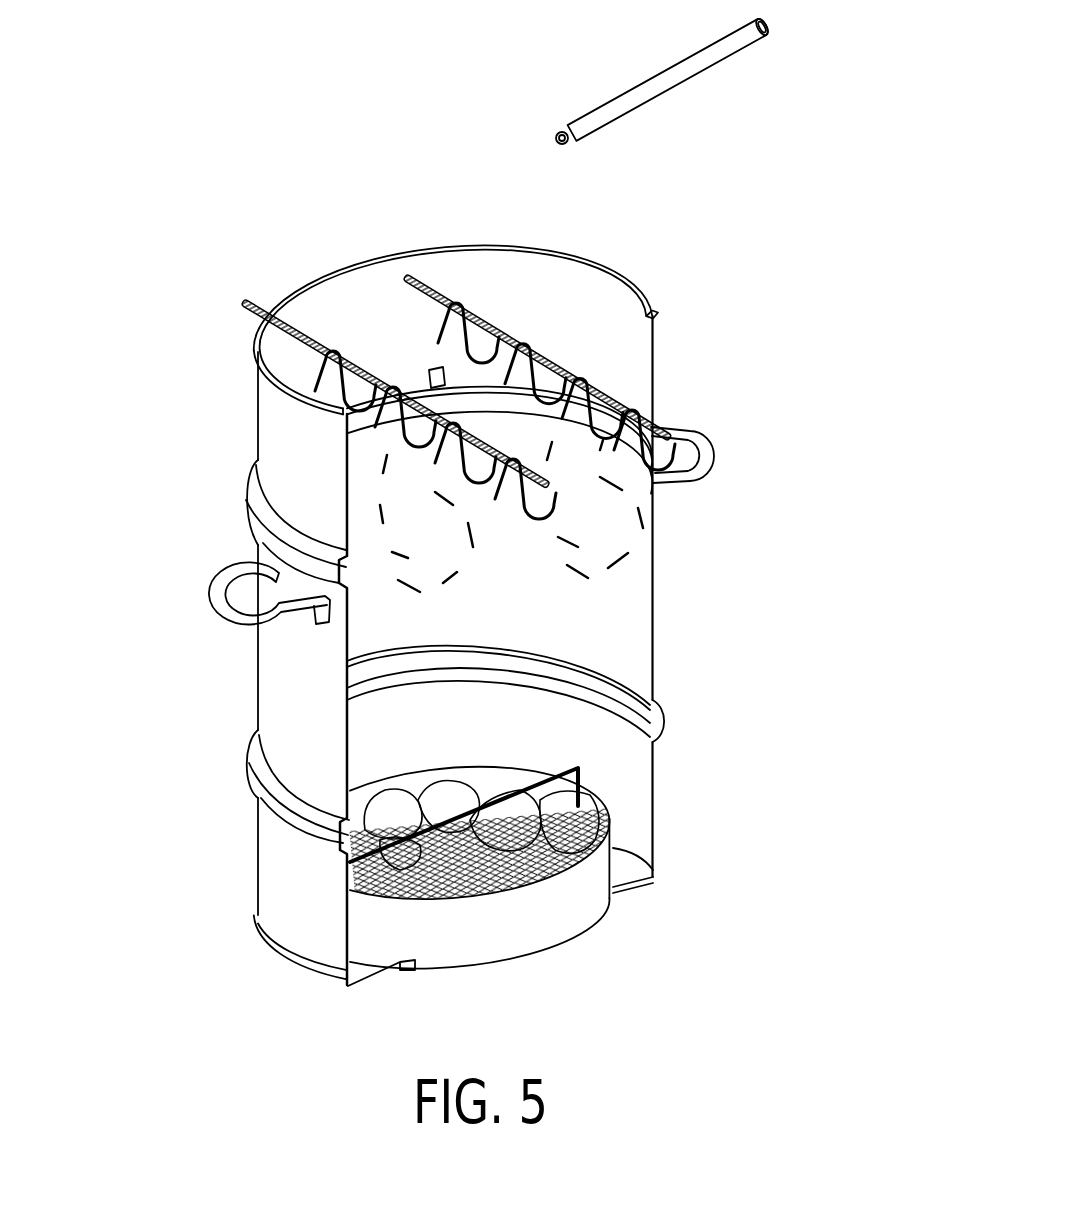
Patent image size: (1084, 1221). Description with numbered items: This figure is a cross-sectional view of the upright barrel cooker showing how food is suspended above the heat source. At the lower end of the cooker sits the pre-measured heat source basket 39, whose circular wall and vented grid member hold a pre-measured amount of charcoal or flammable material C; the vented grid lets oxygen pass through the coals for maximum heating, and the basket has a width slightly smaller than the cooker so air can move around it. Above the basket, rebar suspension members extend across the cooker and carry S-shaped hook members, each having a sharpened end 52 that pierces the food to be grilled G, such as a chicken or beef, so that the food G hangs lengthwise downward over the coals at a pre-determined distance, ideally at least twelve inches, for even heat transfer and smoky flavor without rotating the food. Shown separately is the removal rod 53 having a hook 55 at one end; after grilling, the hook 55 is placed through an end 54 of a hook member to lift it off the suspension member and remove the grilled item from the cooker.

The heat source basket 39 is at (592, 912).
The sharpened end 52 is at (518, 323).
The removal rod 53 is at (733, 50).
The end of the hook member 54 is at (430, 330).
The hook 55 is at (557, 133).
The charcoal or flammable material C is at (577, 825).
The food to be grilled G is at (390, 535).